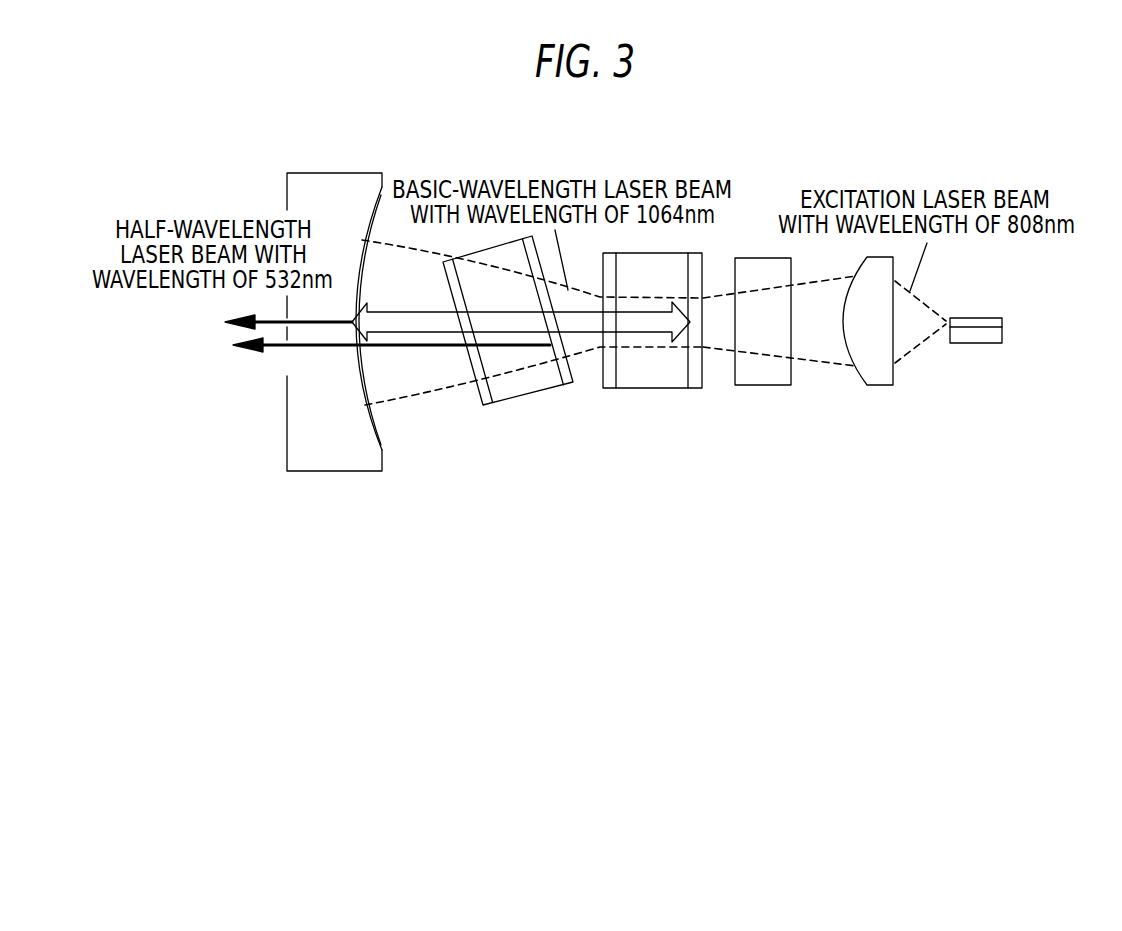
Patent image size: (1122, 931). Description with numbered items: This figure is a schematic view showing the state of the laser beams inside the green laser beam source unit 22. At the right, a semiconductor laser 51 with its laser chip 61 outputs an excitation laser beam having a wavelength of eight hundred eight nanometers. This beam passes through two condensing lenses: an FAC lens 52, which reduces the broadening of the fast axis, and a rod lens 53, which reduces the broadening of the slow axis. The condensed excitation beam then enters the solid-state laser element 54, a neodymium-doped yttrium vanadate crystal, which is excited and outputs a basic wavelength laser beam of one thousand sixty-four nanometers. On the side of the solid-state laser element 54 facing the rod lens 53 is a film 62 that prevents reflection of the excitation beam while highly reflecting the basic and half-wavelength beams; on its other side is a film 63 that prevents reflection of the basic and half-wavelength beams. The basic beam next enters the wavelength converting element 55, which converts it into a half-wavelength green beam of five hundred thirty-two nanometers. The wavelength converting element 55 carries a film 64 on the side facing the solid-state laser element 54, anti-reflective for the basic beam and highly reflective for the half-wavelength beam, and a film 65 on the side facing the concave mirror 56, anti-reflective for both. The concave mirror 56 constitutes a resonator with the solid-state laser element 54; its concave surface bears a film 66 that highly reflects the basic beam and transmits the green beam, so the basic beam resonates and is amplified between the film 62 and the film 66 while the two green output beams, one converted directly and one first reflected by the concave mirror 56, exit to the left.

The green laser beam source unit 22 is at (791, 158).
The semiconductor laser 51 is at (978, 351).
The FAC lens 52 is at (879, 386).
The rod lens 53 is at (769, 386).
The solid-state laser element 54 is at (656, 396).
The wavelength converting element 55 is at (524, 404).
The concave mirror 56 is at (336, 480).
The laser chip 61 is at (976, 318).
The film 62 is at (694, 389).
The film 63 is at (608, 389).
The film 64 is at (567, 386).
The film 65 is at (489, 406).
The film 66 is at (381, 433).